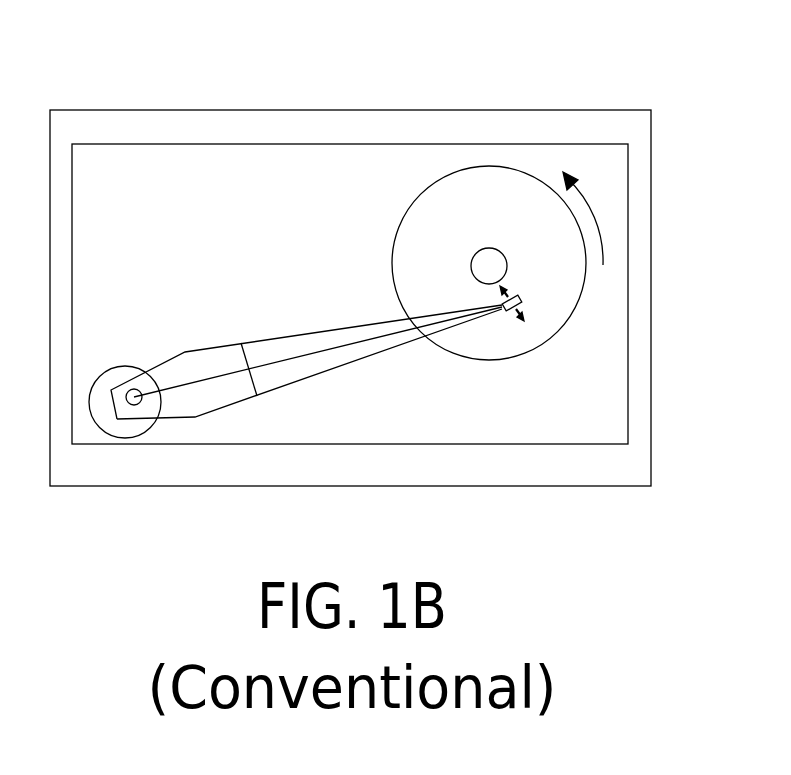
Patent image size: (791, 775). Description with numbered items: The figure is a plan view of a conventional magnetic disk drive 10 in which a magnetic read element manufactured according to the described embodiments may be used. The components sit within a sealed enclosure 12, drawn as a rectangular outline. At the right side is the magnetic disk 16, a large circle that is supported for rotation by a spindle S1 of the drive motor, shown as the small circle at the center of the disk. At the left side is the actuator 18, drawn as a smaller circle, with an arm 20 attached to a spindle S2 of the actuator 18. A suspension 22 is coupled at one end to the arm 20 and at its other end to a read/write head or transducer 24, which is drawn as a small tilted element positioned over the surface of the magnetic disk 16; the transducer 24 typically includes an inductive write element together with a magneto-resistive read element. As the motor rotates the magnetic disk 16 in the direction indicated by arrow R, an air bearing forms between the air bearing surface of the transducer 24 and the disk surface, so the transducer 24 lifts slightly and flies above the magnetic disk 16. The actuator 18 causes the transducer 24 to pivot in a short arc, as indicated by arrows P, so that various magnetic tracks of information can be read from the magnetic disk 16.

The magnetic disk drive 10 is at (420, 94).
The sealed enclosure 12 is at (394, 465).
The magnetic disk 16 is at (489, 263).
The spindle S1 is at (491, 256).
The actuator 18 is at (110, 378).
The spindle S2 is at (140, 400).
The arm 20 is at (185, 355).
The suspension 22 is at (307, 367).
The transducer 24 is at (518, 297).
The arrows indicating transducer pivot P is at (518, 299).
The arrow indicating disk rotation R is at (588, 218).